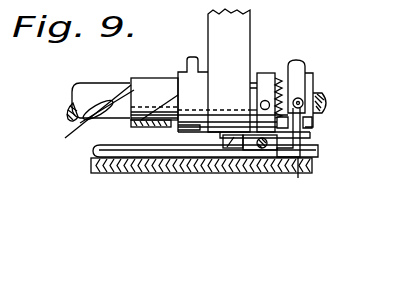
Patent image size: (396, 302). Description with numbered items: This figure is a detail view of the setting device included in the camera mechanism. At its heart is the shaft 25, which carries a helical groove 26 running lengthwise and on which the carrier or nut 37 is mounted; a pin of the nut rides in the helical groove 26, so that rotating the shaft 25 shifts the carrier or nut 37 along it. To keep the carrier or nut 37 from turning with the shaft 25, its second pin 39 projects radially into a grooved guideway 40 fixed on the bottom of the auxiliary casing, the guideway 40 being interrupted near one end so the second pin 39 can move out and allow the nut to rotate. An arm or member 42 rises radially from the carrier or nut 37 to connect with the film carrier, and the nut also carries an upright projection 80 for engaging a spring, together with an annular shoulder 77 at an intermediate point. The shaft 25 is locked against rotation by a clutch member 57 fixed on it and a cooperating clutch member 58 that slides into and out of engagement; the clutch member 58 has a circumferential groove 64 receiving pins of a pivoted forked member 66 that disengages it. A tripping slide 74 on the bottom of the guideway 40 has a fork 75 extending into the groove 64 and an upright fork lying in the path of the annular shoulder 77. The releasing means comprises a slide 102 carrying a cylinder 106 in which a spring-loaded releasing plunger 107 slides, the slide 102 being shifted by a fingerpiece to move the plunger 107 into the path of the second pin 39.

The shaft 25 is at (97, 95).
The helical groove 26 is at (83, 121).
The carrier or nut 37 is at (176, 80).
The second pin 39 is at (203, 172).
The grooved guideway 40 is at (137, 147).
The arm or member 42 is at (237, 28).
The clutch member 57 is at (267, 79).
The clutch member 58 is at (313, 78).
The circumferential groove 64 is at (312, 126).
The forked member 66 is at (299, 70).
The tripping slide 74 is at (298, 180).
The fork 75 is at (301, 149).
The annular shoulder 77 is at (131, 125).
The upright projection 80 is at (188, 62).
The slide 102 is at (264, 150).
The cylinder 106 is at (256, 152).
The releasing plunger 107 is at (237, 152).